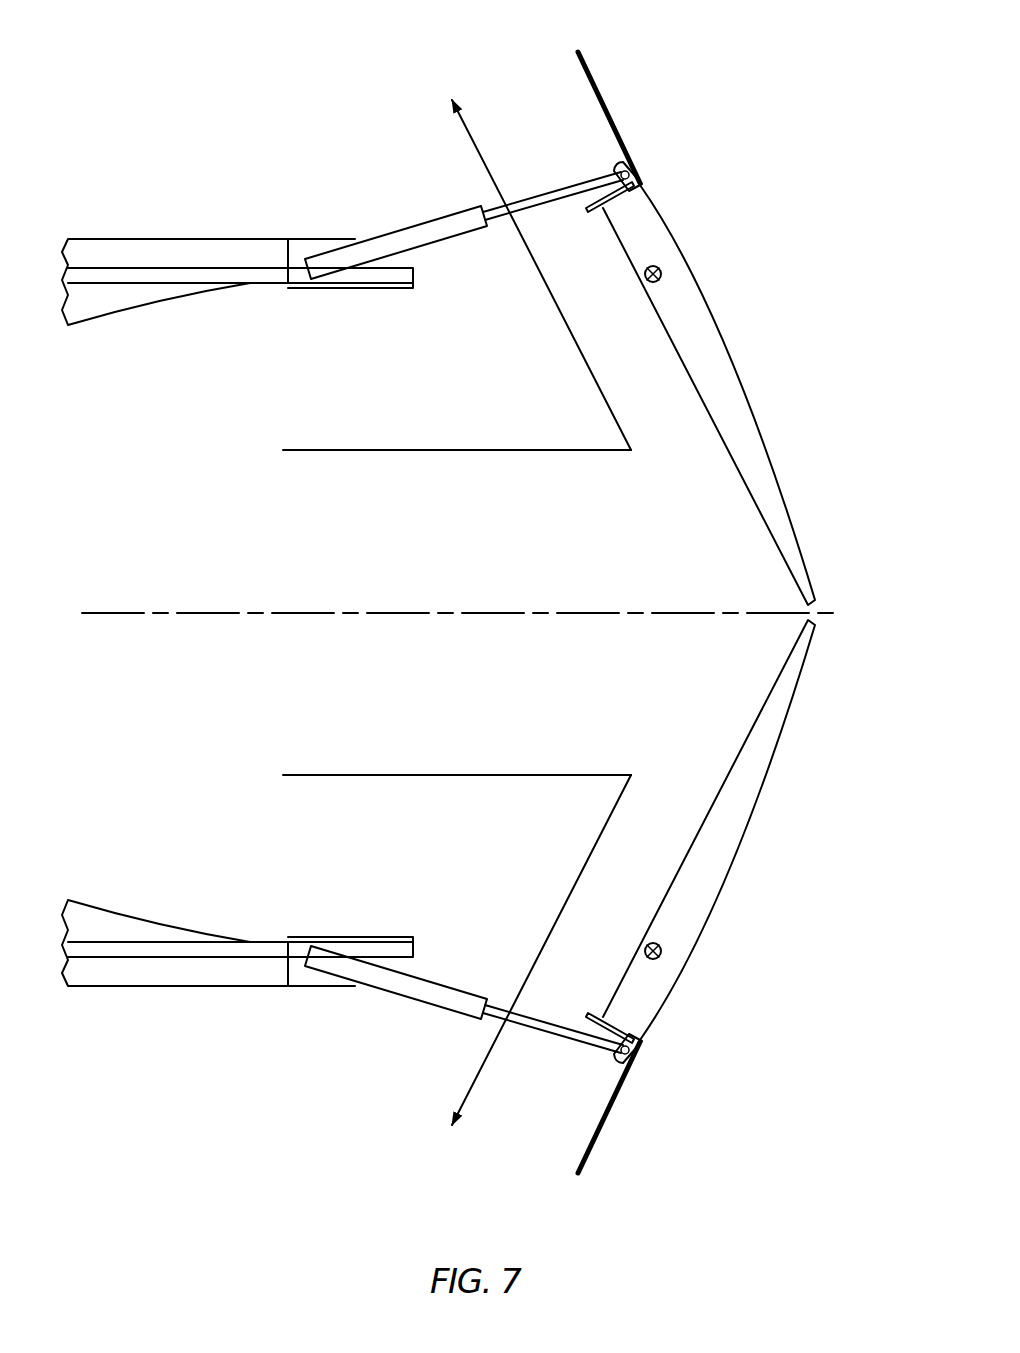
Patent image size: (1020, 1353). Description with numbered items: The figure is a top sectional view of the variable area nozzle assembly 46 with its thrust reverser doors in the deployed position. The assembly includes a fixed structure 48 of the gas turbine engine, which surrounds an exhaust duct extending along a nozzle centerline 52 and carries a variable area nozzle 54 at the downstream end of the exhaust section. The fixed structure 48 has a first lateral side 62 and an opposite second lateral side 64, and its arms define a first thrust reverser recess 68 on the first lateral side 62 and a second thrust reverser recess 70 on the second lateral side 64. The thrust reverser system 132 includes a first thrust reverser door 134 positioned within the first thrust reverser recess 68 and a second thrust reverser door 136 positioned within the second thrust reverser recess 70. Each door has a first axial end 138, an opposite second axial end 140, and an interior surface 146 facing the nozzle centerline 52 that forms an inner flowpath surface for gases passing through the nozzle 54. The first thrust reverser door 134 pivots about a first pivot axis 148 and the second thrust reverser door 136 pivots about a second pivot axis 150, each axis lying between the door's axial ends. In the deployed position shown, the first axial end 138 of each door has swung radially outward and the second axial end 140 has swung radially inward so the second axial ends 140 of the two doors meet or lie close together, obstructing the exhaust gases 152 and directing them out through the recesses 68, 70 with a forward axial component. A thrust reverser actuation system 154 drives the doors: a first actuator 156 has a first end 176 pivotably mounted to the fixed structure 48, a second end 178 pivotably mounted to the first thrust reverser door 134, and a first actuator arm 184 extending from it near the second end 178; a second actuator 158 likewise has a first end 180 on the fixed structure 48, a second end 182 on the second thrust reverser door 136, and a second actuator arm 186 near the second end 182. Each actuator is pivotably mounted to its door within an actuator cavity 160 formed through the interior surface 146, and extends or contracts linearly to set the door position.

The variable area nozzle assembly 46 is at (770, 82).
The fixed structure 48 is at (107, 228).
The nozzle centerline 52 is at (95, 614).
The variable area nozzle 54 is at (703, 97).
The first lateral side 62 is at (110, 988).
The second lateral side 64 is at (207, 238).
The first thrust reverser recess 68 is at (668, 1035).
The second thrust reverser recess 70 is at (784, 402).
The thrust reverser system 132 is at (731, 214).
The first thrust reverser door 134 is at (737, 897).
The second thrust reverser door 136 is at (733, 327).
The first axial end 138 is at (572, 72).
The second axial end 140 is at (834, 594).
The interior surface 146 is at (755, 507).
The first pivot axis 148 is at (661, 947).
The second pivot axis 150 is at (661, 278).
The exhaust gases 152 is at (468, 451).
The thrust reverser actuation system 154 is at (410, 295).
The first actuator 156 is at (430, 980).
The second actuator 158 is at (455, 233).
The actuator cavity 160 is at (413, 260).
The first end 176 is at (310, 920).
The second end 178 is at (616, 1066).
The first end 180 is at (312, 287).
The second end 182 is at (616, 160).
The first actuator arm 184 is at (588, 1012).
The second actuator arm 186 is at (590, 215).